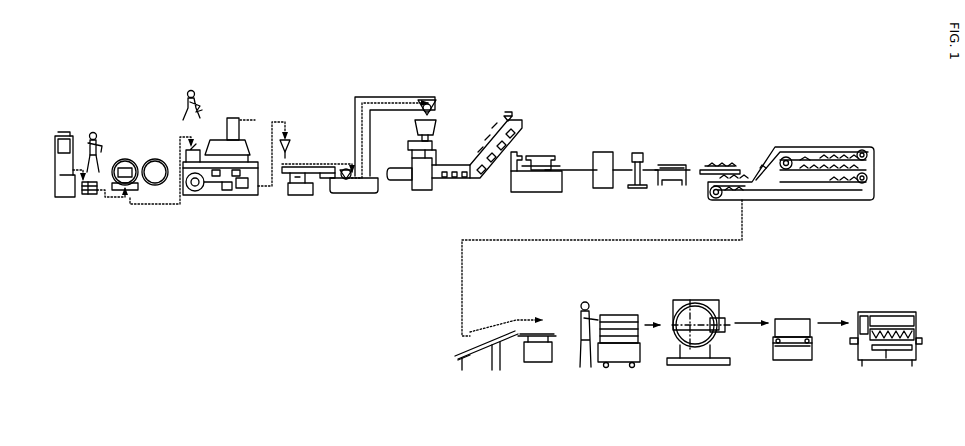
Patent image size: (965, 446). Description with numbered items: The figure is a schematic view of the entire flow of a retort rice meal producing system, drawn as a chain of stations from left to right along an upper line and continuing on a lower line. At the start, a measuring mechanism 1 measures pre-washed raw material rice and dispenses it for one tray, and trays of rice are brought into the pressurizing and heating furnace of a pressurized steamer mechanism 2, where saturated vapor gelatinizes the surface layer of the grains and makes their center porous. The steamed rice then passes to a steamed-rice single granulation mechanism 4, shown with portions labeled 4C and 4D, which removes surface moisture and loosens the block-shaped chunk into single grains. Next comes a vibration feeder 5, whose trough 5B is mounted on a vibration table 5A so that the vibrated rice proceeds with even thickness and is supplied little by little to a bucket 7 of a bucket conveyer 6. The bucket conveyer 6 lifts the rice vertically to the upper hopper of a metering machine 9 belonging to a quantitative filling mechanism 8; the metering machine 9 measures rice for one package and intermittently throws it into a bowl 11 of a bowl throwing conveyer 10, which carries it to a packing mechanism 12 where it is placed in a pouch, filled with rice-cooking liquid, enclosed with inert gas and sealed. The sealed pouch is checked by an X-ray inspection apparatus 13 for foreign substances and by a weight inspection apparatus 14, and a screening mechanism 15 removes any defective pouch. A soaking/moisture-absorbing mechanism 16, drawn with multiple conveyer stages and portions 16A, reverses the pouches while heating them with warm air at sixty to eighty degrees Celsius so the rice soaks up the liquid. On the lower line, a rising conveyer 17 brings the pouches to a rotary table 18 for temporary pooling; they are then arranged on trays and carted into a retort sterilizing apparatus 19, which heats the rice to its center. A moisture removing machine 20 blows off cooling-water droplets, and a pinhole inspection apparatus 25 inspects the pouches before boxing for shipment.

The measuring mechanism 1 is at (60, 136).
The pressurized steamer mechanism 2 is at (120, 162).
The steamed-rice single granulation mechanism 4 is at (216, 168).
The molding machine upper unit 4C is at (244, 140).
The molding machine drive wheel 4D is at (194, 191).
The vibration feeder 5 is at (310, 179).
The vibration table 5A is at (300, 195).
The trough 5B is at (323, 178).
The bucket conveyer 6 is at (377, 103).
The bucket 7 is at (344, 170).
The quantitative filling mechanism 8 is at (441, 117).
The metering machine 9 is at (437, 122).
The bowl throwing conveyer 10 is at (477, 135).
The bowl 11 is at (512, 118).
The packing mechanism 12 is at (538, 155).
The X-ray inspection apparatus 13 is at (604, 152).
The weight inspection apparatus 14 is at (637, 153).
The screening mechanism 15 is at (672, 165).
The soaking/moisture-absorbing mechanism 16 is at (794, 147).
The conveyor end section 16A is at (772, 148).
The rising conveyer 17 is at (481, 333).
The rotary table 18 is at (544, 340).
The retort sterilizing apparatus 19 is at (692, 300).
The moisture removing machine 20 is at (793, 320).
The pinhole inspection apparatus 25 is at (878, 312).